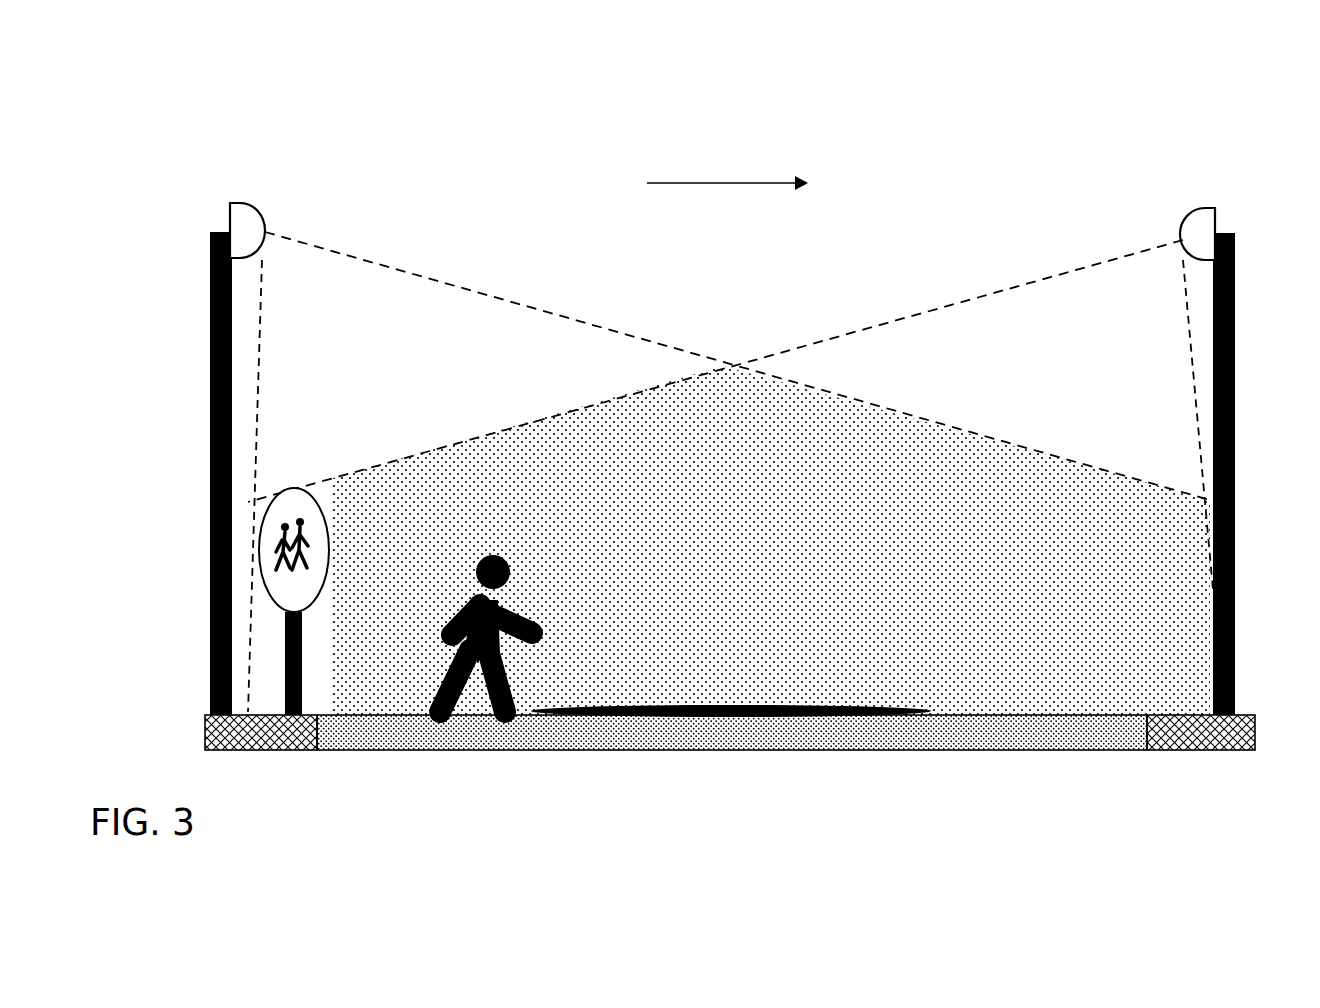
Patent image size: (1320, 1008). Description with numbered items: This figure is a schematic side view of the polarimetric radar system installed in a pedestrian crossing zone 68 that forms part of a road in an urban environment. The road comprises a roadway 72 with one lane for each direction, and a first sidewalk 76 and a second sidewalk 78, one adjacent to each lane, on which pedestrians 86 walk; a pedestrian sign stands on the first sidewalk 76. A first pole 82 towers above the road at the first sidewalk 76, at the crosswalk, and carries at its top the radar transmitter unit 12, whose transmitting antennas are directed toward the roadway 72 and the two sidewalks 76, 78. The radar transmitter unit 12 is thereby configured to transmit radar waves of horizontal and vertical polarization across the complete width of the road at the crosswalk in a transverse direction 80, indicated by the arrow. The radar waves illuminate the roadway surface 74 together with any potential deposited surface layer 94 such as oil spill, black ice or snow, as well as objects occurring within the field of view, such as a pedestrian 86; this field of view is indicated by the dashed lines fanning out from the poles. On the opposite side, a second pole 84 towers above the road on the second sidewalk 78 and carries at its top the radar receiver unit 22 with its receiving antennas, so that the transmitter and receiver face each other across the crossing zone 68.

The radar transmitter unit 12 is at (224, 196).
The radar receiver unit 22 is at (1230, 196).
The pedestrian crossing zone 68 is at (348, 142).
The roadway 72 is at (658, 738).
The roadway surface 74 is at (1018, 712).
The first sidewalk 76 is at (306, 714).
The second sidewalk 78 is at (1172, 712).
The transverse direction 80 is at (725, 184).
The first pole 82 is at (210, 365).
The second pole 84 is at (1235, 365).
The pedestrian 86 is at (485, 585).
The deposited surface layer 94 is at (797, 720).